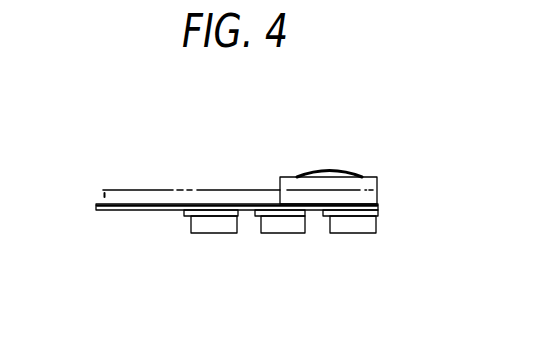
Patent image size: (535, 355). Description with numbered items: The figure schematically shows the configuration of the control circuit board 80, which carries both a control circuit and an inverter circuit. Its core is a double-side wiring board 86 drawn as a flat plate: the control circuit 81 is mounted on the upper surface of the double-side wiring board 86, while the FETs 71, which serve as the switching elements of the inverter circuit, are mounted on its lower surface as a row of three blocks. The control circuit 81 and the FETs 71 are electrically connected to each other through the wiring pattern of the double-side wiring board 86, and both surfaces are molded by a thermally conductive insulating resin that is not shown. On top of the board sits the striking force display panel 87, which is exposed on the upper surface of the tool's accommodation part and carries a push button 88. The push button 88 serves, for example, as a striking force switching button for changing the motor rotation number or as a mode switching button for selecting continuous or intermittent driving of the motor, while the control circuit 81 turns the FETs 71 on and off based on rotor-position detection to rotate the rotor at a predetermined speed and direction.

The control circuit board 80 is at (237, 210).
The double-side wiring board 86 is at (157, 204).
The control circuit 81 is at (215, 190).
The striking force display panel 87 is at (290, 177).
The push button 88 is at (328, 172).
The FETs 71 is at (337, 234).